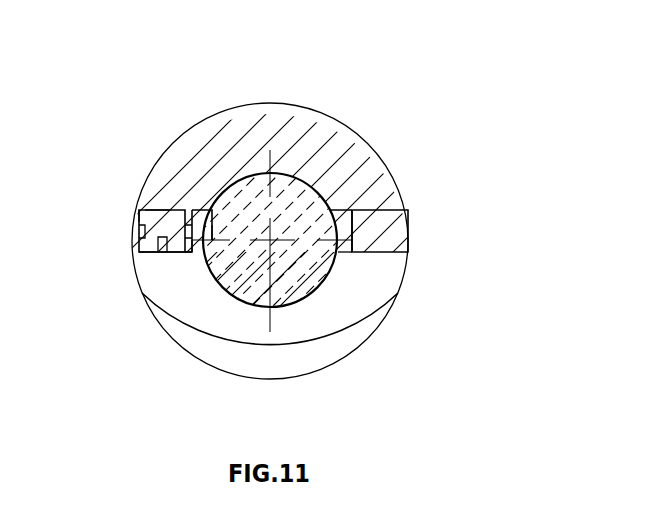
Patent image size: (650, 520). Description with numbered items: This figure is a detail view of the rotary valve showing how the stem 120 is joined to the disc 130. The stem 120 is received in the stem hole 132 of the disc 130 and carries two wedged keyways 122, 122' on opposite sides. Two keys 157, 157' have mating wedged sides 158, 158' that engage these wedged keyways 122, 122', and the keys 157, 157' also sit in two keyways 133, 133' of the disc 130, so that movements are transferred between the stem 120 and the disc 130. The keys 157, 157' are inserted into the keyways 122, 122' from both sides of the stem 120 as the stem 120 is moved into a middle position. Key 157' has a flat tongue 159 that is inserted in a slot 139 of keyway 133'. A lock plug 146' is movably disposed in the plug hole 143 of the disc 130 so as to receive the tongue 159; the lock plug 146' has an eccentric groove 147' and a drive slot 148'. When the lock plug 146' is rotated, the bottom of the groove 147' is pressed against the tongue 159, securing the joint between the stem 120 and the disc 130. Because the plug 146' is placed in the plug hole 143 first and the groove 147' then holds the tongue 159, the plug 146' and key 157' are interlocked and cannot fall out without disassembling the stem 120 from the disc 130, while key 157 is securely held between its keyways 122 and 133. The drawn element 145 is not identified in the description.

The stem 120 is at (283, 228).
The wedged keyway 122 is at (325, 250).
The wedged keyway 122' is at (276, 135).
The disc 130 is at (332, 155).
The stem hole 132 is at (279, 307).
The keyway 133 is at (418, 206).
The keyway 133' is at (179, 141).
The slot 139 is at (170, 250).
The plug hole 143 is at (140, 252).
The top wall 145 is at (157, 212).
The lock plug 146' is at (83, 187).
The eccentric groove 147' is at (86, 222).
The drive slot 148' is at (107, 306).
The key 157 is at (408, 231).
The key 157' is at (181, 335).
The wedged side 158 is at (417, 288).
The wedged side 158' is at (275, 332).
The flat tongue 159 is at (186, 222).